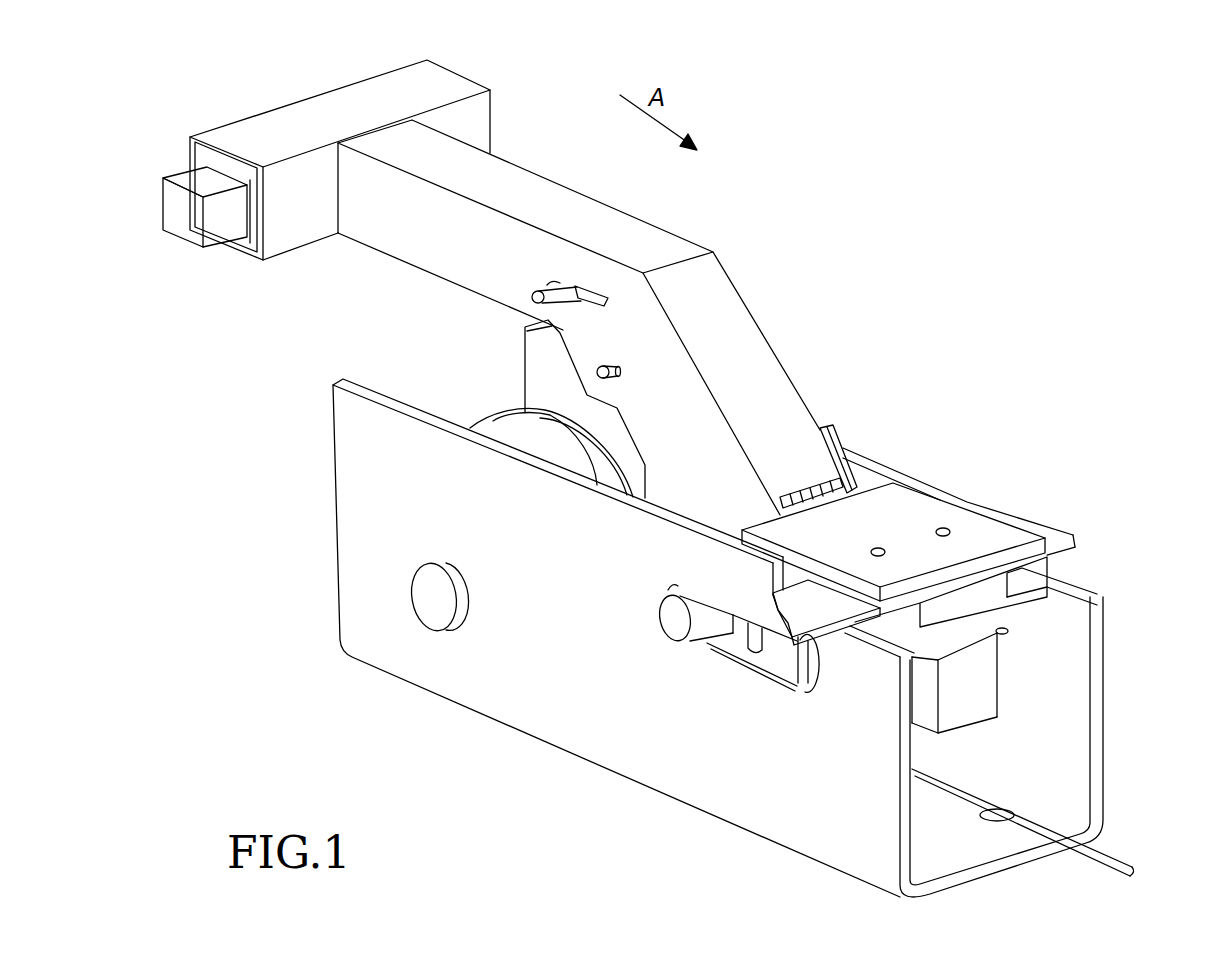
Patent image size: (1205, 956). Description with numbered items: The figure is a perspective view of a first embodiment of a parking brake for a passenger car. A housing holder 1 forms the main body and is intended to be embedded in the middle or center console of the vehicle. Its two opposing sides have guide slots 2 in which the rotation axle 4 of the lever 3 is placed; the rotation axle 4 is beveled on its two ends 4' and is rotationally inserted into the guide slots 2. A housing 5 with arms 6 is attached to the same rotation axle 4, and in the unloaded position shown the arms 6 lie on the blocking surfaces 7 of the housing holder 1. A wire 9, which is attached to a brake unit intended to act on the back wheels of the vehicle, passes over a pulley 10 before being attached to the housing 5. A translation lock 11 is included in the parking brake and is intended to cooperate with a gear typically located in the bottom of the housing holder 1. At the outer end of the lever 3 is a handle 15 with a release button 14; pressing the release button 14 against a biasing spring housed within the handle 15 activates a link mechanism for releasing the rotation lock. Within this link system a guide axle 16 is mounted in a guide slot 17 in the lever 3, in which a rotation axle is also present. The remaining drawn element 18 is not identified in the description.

The housing holder 1 is at (534, 743).
The guide slots 2 is at (778, 652).
The lever 3 is at (596, 190).
The rotation axle 4 is at (694, 657).
The beveled ends of the rotation axle 4' is at (640, 601).
The housing 5 is at (973, 522).
The arms 6 is at (830, 626).
The blocking surfaces 7 is at (1097, 585).
The wire 9 is at (1113, 860).
The pulley 10 is at (503, 431).
The translation lock 11 is at (762, 450).
The release button 14 is at (185, 228).
The handle 15 is at (312, 104).
The guide axle 16 is at (533, 294).
The guide slot 17 is at (603, 303).
The lever 18 is at (597, 371).